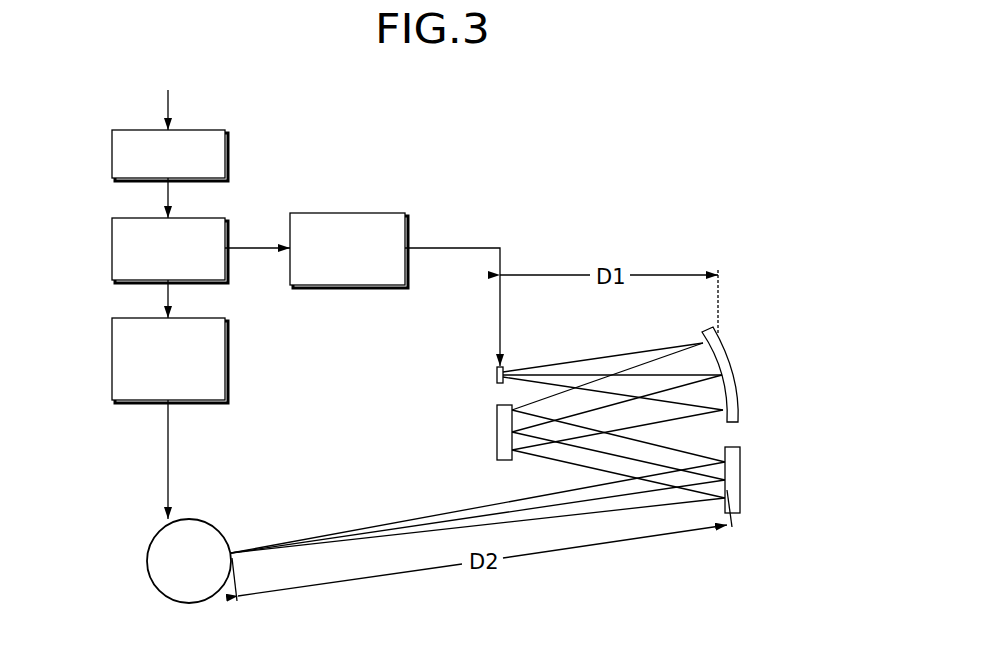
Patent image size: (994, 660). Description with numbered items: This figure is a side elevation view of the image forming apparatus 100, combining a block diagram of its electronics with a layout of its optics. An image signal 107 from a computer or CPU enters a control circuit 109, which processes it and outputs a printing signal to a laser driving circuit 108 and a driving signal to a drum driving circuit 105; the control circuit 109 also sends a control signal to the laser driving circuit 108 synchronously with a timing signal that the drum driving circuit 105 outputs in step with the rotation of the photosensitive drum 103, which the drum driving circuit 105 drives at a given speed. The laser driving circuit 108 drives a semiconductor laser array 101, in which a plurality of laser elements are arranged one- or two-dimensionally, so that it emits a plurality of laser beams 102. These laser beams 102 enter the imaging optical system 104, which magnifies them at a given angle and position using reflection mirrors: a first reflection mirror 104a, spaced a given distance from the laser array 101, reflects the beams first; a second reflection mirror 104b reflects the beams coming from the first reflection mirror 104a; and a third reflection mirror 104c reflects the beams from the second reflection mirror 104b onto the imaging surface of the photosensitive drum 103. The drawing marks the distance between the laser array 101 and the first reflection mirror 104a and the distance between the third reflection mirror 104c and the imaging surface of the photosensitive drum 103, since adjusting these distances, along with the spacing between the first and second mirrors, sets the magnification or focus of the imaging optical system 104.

The image forming apparatus 100 is at (416, 125).
The semiconductor laser array 101 is at (497, 373).
The laser beams 102 is at (585, 360).
The photosensitive drum 103 is at (200, 537).
The imaging optical system 104 is at (698, 443).
The first reflection mirror 104a is at (732, 363).
The second reflection mirror 104b is at (512, 452).
The third reflection mirror 104c is at (733, 458).
The drum driving circuit 105 is at (112, 336).
The image signal 107 is at (112, 143).
The laser driving circuit 108 is at (345, 213).
The control circuit 109 is at (112, 233).